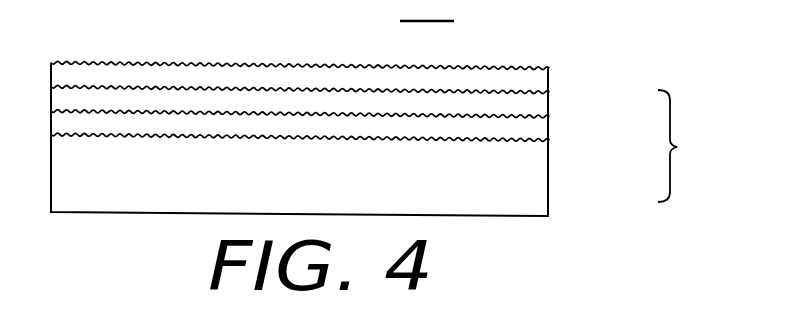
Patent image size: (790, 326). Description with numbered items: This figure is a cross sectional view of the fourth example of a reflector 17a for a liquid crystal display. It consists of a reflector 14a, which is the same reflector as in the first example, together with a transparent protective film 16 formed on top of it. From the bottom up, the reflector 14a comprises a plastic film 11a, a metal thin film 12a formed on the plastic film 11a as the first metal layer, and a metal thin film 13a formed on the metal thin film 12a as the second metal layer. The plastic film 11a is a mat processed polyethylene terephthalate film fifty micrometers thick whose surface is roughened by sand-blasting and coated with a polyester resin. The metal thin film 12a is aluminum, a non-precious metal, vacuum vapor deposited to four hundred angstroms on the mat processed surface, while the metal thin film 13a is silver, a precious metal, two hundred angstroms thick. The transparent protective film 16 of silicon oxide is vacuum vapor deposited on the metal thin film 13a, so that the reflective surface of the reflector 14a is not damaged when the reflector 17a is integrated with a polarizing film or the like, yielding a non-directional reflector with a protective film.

The plastic film 11a is at (548, 187).
The metal thin film 12a is at (548, 130).
The metal thin film 13a is at (548, 103).
The reflector 14a is at (696, 146).
The transparent protective film 16 is at (548, 80).
The reflector for a liquid crystal display 17a is at (427, 10).